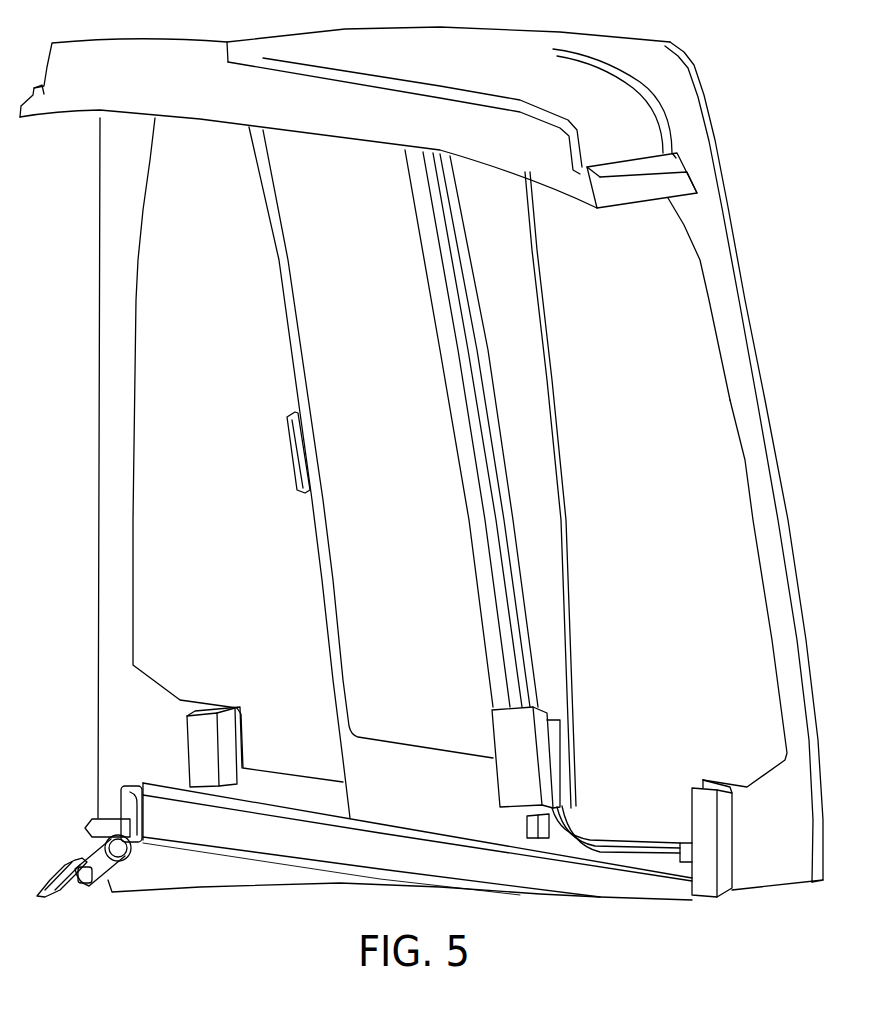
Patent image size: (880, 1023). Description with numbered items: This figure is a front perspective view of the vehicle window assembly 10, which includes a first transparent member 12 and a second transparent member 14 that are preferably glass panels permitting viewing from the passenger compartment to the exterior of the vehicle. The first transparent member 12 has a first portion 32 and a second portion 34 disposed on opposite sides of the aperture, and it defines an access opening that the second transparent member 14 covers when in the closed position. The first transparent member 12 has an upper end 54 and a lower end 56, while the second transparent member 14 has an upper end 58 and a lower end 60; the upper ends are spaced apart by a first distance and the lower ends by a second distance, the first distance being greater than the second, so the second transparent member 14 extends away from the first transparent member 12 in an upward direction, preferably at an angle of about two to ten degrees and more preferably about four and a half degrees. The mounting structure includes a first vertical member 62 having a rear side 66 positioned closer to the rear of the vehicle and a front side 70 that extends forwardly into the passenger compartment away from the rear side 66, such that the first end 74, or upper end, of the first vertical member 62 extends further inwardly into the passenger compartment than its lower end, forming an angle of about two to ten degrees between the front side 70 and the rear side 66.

The vehicle window assembly 10 is at (779, 431).
The first transparent member 12 is at (173, 310).
The second transparent member 14 is at (355, 170).
The first portion 32 is at (740, 663).
The second portion 34 is at (168, 592).
The upper end 54 is at (657, 237).
The lower end 56 is at (638, 800).
The upper end 58 is at (297, 163).
The lower end 60 is at (413, 703).
The first vertical member 62 is at (527, 430).
The rear side 66 is at (547, 331).
The front side 70 is at (527, 610).
The first end 74 is at (490, 194).